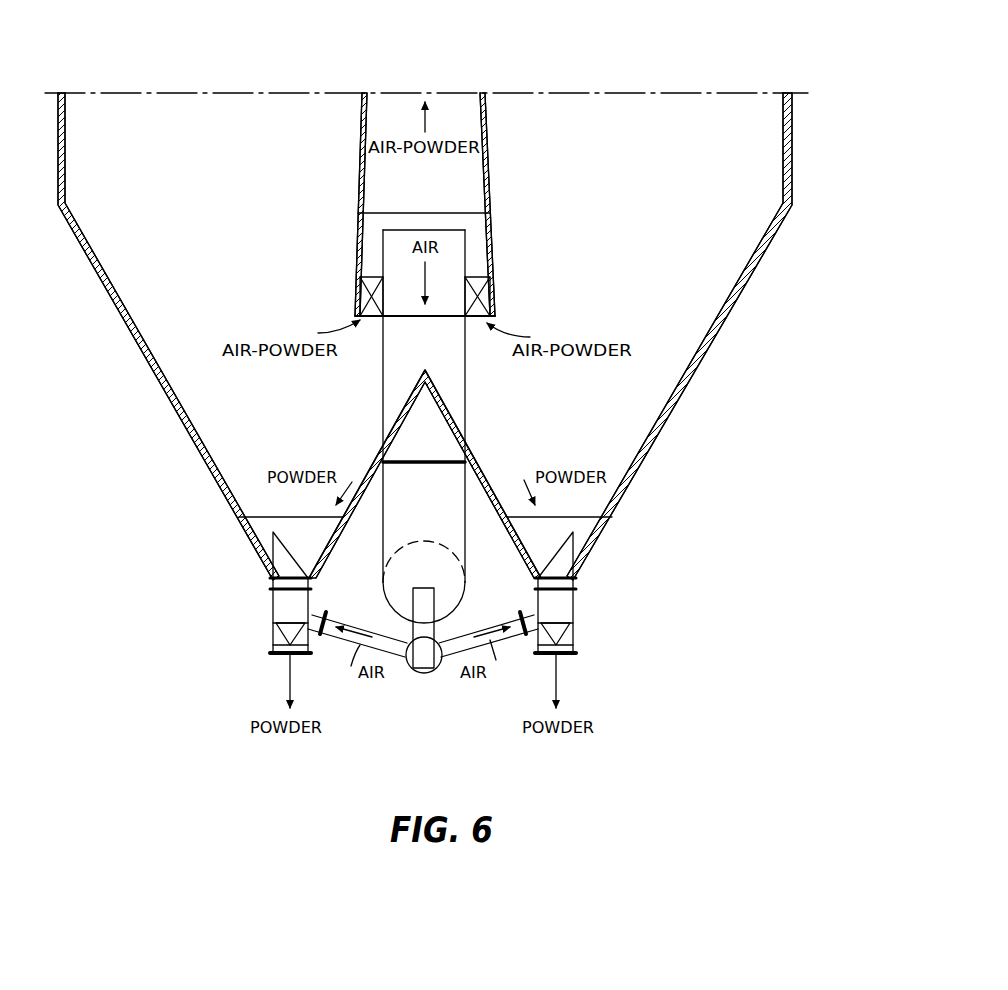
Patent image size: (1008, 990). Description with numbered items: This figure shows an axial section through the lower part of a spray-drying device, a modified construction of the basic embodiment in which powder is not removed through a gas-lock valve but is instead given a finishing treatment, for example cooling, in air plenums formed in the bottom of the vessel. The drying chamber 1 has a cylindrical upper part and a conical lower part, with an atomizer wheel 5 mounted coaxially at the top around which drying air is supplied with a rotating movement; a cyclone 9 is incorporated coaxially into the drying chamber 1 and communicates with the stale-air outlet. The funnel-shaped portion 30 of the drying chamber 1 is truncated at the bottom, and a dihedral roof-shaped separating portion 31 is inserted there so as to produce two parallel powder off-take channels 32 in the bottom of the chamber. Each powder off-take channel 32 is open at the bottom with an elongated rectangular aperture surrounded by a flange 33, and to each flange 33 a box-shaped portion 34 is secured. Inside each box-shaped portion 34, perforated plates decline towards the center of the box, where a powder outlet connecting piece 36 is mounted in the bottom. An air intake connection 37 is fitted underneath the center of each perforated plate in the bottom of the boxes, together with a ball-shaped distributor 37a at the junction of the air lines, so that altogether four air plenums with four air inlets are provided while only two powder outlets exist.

The drying chamber 1 is at (598, 279).
The atomizer wheel 5 is at (396, 380).
The cyclone 9 is at (478, 176).
The funnel-shaped portion 30 is at (716, 337).
The dihedral roof-shaped separating portion 31 is at (493, 476).
The powder off-take channel 32 is at (252, 541).
The flange 33 is at (271, 589).
The box-shaped portion 34 is at (273, 613).
The powder outlet connecting piece 36 is at (277, 656).
The air intake connection 37 is at (311, 656).
The air distributor ball 37a is at (452, 655).